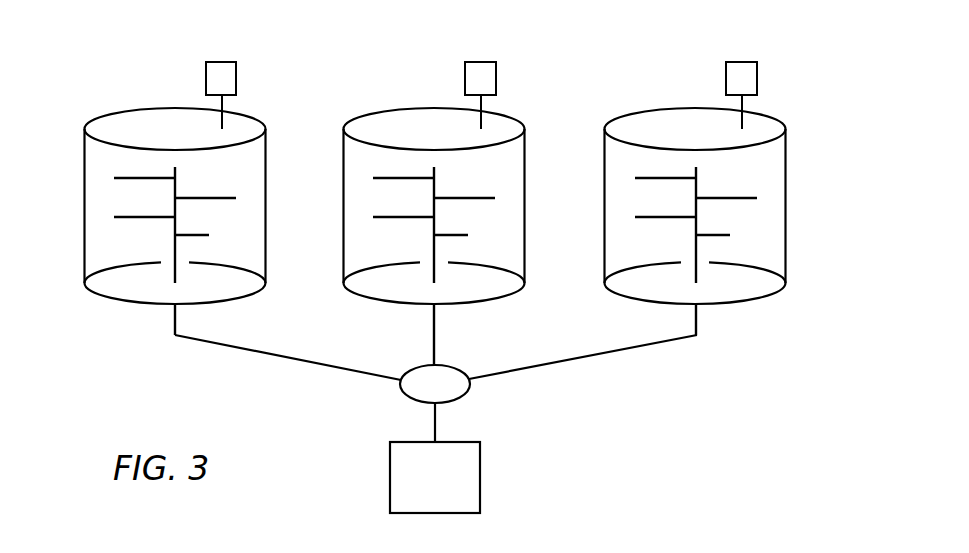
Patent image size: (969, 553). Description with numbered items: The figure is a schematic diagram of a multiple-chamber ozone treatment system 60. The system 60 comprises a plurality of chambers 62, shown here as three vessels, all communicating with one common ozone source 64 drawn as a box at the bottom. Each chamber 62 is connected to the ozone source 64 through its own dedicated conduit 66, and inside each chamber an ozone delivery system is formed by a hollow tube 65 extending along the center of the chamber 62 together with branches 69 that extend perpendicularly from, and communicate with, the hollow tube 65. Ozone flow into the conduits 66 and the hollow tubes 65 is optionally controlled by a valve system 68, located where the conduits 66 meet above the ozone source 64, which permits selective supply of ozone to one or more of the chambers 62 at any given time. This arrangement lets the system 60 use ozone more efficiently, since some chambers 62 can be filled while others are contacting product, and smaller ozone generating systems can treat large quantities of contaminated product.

The multiple-chamber ozone treatment system 60 is at (834, 51).
The chamber 62 is at (84, 168).
The ozone source 64 is at (390, 465).
The hollow tube 65 is at (173, 213).
The conduit 66 is at (173, 328).
The valve system 68 is at (400, 393).
The branches 69 is at (127, 217).